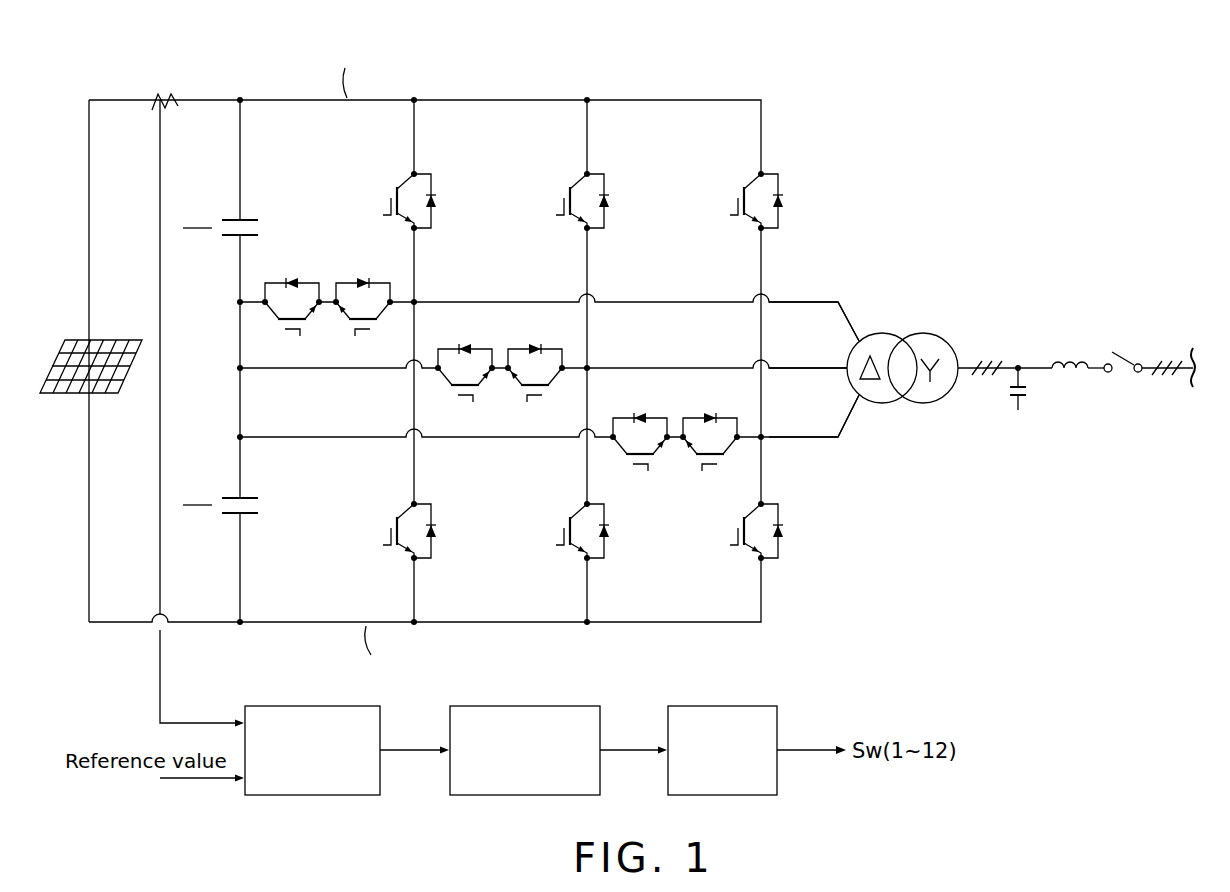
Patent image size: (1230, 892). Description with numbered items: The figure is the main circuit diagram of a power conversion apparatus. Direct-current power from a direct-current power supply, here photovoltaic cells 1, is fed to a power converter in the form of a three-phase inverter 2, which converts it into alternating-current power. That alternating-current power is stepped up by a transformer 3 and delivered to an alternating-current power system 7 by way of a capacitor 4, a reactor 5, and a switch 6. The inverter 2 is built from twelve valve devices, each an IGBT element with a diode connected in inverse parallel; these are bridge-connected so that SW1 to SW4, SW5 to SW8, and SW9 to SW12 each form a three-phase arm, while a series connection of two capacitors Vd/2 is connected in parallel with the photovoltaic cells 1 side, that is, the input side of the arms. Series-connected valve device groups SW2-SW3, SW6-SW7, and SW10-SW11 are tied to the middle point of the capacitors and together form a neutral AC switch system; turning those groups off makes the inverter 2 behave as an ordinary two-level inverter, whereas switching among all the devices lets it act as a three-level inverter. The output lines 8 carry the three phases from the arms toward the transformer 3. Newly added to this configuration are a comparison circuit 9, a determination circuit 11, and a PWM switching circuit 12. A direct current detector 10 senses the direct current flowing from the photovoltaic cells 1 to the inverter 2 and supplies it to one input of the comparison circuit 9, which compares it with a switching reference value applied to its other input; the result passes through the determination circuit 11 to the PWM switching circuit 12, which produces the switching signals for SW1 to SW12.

The photovoltaic cells 1 is at (118, 340).
The three-phase inverter 2 is at (474, 357).
The transformer 3 is at (904, 333).
The capacitor 4 is at (1035, 393).
The reactor 5 is at (1069, 350).
The switch 6 is at (1130, 352).
The alternating-current power system 7 is at (1195, 348).
The output line 8 is at (613, 286).
The comparison circuit 9 is at (290, 705).
The direct current detector 10 is at (170, 92).
The determination circuit 11 is at (493, 705).
The PWM switching circuit 12 is at (713, 705).